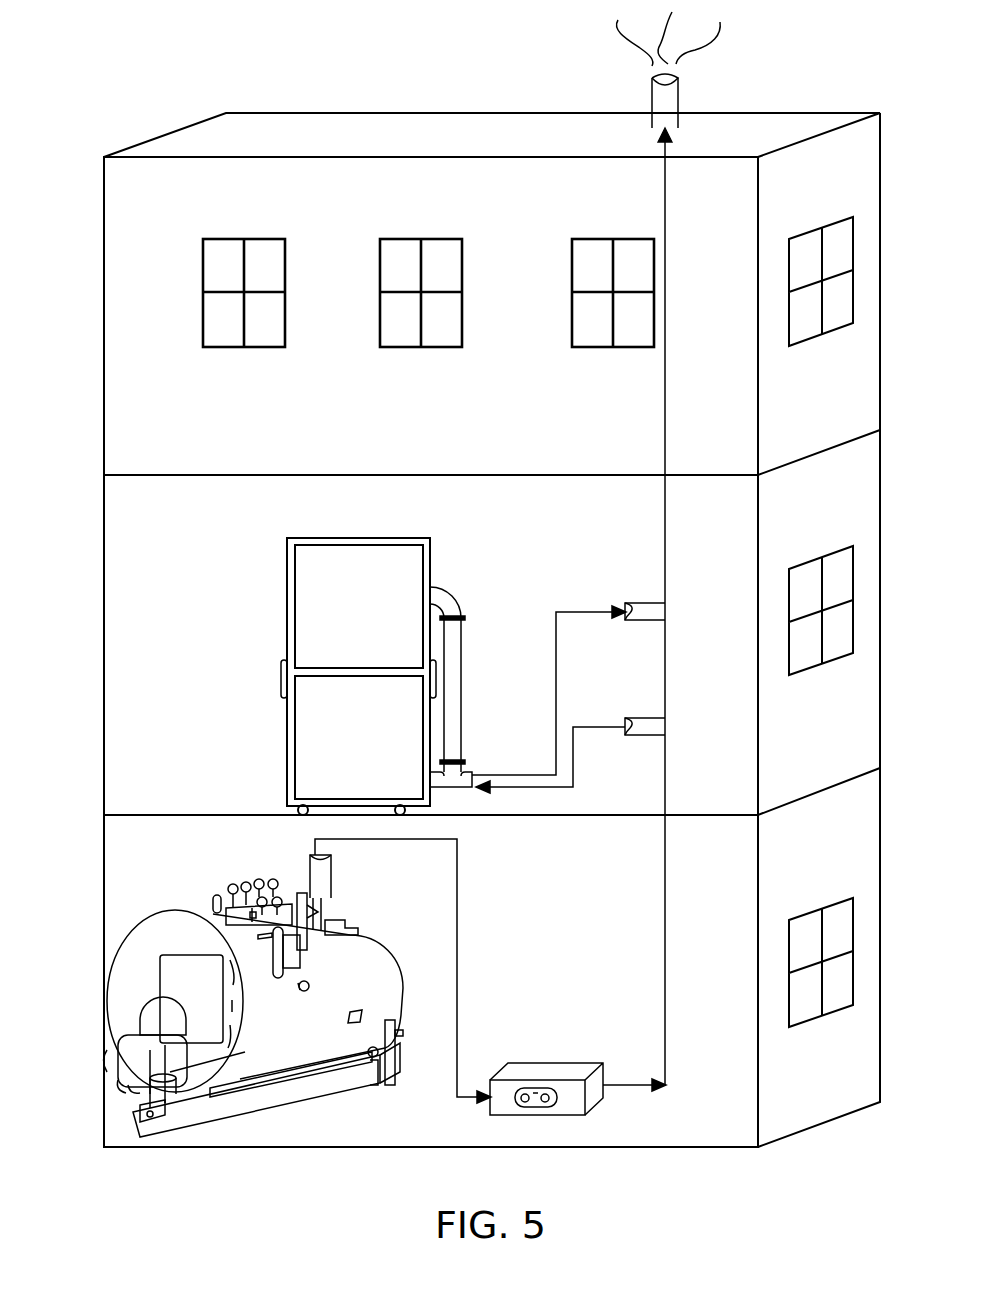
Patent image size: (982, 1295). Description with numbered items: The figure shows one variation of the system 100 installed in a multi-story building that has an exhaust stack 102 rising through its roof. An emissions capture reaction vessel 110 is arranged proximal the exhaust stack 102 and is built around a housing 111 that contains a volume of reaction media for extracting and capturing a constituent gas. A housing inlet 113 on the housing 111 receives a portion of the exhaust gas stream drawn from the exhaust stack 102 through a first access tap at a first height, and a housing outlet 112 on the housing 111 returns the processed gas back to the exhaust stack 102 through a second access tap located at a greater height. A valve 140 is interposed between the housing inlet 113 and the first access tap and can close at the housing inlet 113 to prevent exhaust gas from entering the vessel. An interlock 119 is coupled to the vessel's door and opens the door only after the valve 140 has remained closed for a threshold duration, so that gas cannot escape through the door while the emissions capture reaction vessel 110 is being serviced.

The system 100 is at (68, 88).
The exhaust stack 102 is at (660, 103).
The emissions capture reaction vessel 110 is at (423, 537).
The housing 111 is at (291, 748).
The housing outlet 112 is at (443, 597).
The housing inlet 113 is at (462, 788).
The interlock 119 is at (283, 684).
The valve 140 is at (540, 1072).